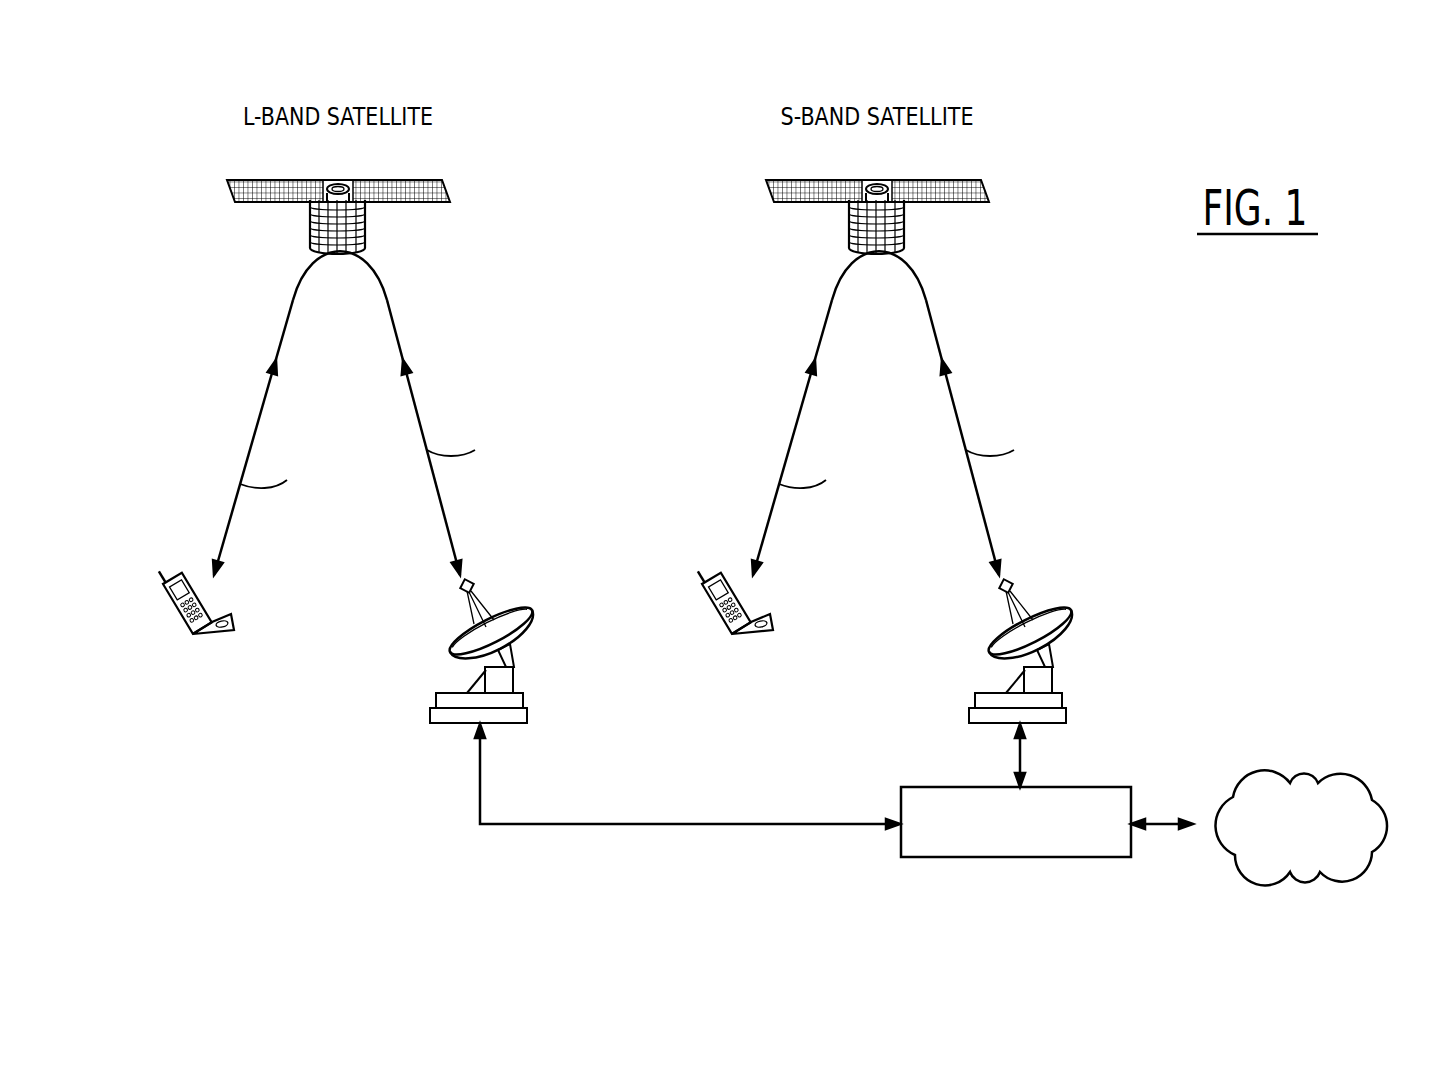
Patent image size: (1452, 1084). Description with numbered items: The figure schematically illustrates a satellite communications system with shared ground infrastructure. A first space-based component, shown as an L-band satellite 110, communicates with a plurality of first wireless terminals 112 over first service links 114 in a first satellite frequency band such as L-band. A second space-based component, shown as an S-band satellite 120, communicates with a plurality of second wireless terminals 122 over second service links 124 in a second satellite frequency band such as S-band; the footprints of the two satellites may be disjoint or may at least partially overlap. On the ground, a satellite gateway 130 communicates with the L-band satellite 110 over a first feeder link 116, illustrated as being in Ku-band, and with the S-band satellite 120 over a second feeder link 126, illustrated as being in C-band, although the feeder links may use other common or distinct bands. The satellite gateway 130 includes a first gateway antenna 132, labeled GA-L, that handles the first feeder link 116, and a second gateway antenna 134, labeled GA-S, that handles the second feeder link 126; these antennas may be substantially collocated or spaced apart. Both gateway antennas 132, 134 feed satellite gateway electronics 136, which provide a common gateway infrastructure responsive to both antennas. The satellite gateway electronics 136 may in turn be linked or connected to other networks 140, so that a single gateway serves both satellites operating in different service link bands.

The L-band satellite 110 is at (362, 183).
The first wireless terminals 112 is at (207, 603).
The first service links 114 is at (293, 300).
The first feeder link 116 is at (385, 300).
The S-band satellite 120 is at (877, 200).
The second wireless terminals 122 is at (757, 598).
The second service links 124 is at (828, 427).
The second feeder link 126 is at (1038, 427).
The satellite gateway 130 is at (834, 814).
The first gateway antenna 132 is at (477, 680).
The second gateway antenna 134 is at (1029, 651).
The satellite gateway electronics 136 is at (1070, 787).
The other networks 140 is at (1302, 770).